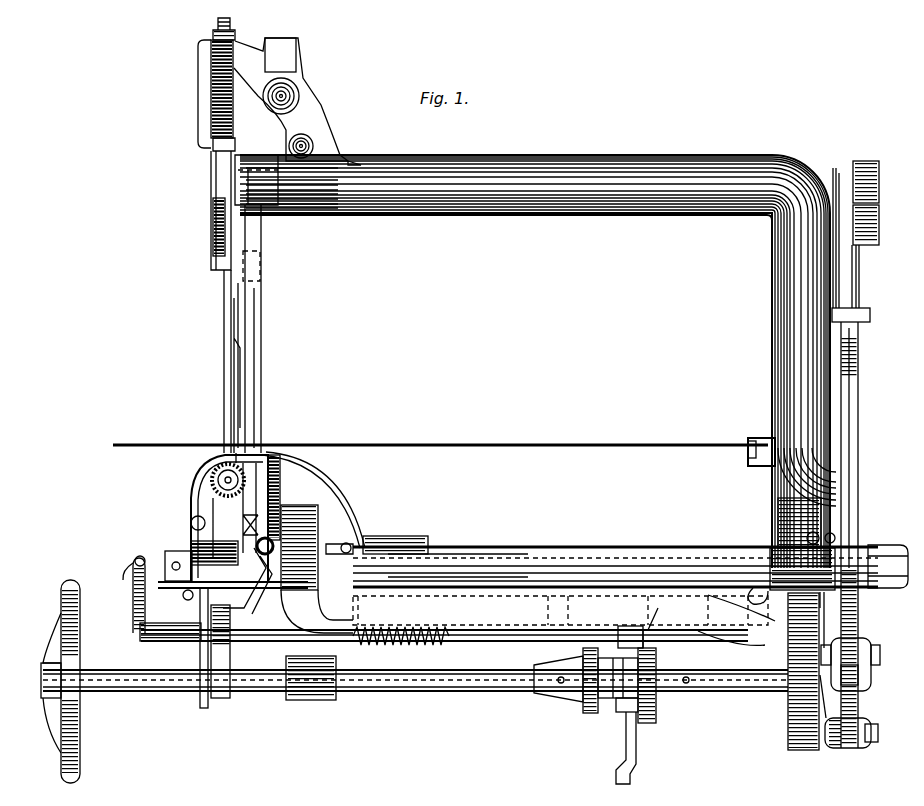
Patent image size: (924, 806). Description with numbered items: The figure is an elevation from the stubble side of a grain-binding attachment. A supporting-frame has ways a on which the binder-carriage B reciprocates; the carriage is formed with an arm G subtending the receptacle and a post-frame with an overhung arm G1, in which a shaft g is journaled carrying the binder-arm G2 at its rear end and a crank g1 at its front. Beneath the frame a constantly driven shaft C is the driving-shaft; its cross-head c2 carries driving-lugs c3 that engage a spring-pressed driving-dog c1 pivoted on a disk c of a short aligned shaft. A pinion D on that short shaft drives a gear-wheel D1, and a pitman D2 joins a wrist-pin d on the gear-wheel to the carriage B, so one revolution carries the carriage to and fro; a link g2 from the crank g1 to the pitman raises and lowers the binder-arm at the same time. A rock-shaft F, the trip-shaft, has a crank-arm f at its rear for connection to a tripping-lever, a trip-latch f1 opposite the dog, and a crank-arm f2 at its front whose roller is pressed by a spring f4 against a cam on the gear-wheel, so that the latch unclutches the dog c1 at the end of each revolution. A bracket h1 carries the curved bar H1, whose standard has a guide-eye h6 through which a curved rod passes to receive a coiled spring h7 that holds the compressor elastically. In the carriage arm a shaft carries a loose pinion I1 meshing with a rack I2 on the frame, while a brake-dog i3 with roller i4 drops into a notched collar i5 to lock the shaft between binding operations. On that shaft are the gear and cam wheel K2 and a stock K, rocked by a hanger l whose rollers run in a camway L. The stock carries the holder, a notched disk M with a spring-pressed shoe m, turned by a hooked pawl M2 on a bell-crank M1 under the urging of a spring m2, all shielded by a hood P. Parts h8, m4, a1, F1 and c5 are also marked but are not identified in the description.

The bracket h1 is at (190, 100).
The guide-eye h6 is at (226, 96).
The coiled spring h7 is at (226, 118).
The presser bar block h8 is at (252, 240).
The curved bar H1 is at (205, 250).
The shaft g is at (272, 200).
The overhung arm G1 is at (434, 208).
The crank g1 is at (870, 212).
The link g2 is at (850, 418).
The binder-arm G2 is at (252, 420).
The binder-carriage B is at (748, 471).
The notched disk M is at (207, 449).
The bell-crank M1 is at (242, 588).
The hooked pawl M2 is at (215, 441).
The spring-pressed shoe m is at (228, 552).
The spring m2 is at (168, 538).
The feed roller m4 is at (183, 512).
The stock K is at (178, 583).
The gear and cam wheel K2 is at (300, 495).
The hood P is at (407, 533).
The brake-dog i3 is at (378, 528).
The anti-friction roller i4 is at (338, 534).
The notched collar i5 is at (322, 534).
The arm G is at (470, 537).
The camway L is at (466, 565).
The hidden guide a1 is at (360, 578).
The pitman D2 is at (814, 510).
The loose pinion I1 is at (830, 532).
The rack I2 is at (852, 618).
The crank-arm f2 is at (814, 592).
The ways a is at (736, 616).
The gear-wheel D1 is at (866, 676).
The wrist-pin d is at (864, 733).
The pinion D is at (780, 690).
The feed rock shaft F1 is at (520, 635).
The spring f4 is at (402, 638).
The crank-arm f is at (124, 592).
The rock-shaft F is at (138, 634).
The hanger l is at (194, 640).
The shaft C is at (53, 612).
The cross-head c2 is at (575, 648).
The disk c is at (648, 710).
The driving-lugs c3 is at (606, 700).
The driving-dog c1 is at (618, 740).
The clutch collar c5 is at (605, 628).
The trip-latch f1 is at (649, 624).